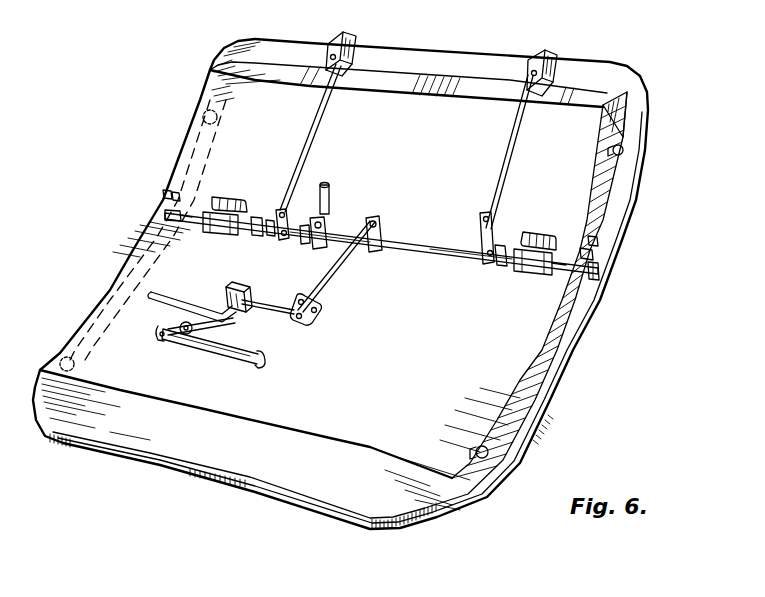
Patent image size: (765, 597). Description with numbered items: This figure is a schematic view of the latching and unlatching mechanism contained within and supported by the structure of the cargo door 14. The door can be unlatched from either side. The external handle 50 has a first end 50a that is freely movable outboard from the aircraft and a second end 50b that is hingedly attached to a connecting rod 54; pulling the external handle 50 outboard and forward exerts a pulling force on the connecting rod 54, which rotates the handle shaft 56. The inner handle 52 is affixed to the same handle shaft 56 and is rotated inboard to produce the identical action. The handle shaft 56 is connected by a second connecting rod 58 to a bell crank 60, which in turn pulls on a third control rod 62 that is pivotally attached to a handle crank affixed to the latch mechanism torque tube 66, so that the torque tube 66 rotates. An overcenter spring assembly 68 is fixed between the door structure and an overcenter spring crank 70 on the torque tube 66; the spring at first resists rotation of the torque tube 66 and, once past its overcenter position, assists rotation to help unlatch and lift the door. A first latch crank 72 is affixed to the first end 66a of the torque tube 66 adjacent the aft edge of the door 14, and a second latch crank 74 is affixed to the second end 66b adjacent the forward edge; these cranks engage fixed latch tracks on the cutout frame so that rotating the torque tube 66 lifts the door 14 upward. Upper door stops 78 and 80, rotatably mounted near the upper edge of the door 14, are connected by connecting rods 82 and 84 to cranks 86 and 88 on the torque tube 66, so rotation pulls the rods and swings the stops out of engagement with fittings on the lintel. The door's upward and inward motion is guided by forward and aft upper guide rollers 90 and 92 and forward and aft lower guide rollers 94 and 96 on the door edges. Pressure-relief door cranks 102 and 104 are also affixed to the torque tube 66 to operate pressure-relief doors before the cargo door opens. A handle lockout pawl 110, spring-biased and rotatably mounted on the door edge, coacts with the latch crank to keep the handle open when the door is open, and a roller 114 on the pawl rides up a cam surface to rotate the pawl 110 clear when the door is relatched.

The door 14 is at (545, 412).
The external handle 50 is at (214, 352).
The first end of the external handle 50a is at (262, 362).
The second end of the external handle 50b is at (160, 342).
The inner handle 52 is at (172, 302).
The connecting rod 54 is at (178, 325).
The handle shaft 56 is at (240, 297).
The second connecting rod 58 is at (278, 318).
The bell crank 60 is at (313, 319).
The third control rod 62 is at (343, 278).
The latch mechanism torque tube 66 is at (456, 258).
The first end of the torque tube 66a is at (560, 275).
The second end of the torque tube 66b is at (182, 225).
The overcenter spring assembly 68 is at (332, 194).
The overcenter spring crank 70 is at (330, 228).
The first latch crank 72 is at (598, 280).
The second latch crank 74 is at (168, 214).
The upper door stop 78 is at (350, 40).
The upper door stop 80 is at (555, 55).
The connecting rod 82 is at (327, 108).
The connecting rod 84 is at (520, 126).
The crank 86 is at (278, 212).
The crank 88 is at (493, 238).
The forward upper guide roller 90 is at (205, 110).
The aft upper guide roller 92 is at (623, 150).
The forward lower guide roller 94 is at (60, 358).
The aft lower guide roller 96 is at (488, 457).
The pressure-relief door crank 102 is at (540, 234).
The pressure-relief door crank 104 is at (233, 196).
The handle lockout pawl 110 is at (598, 243).
The roller 114 is at (594, 256).